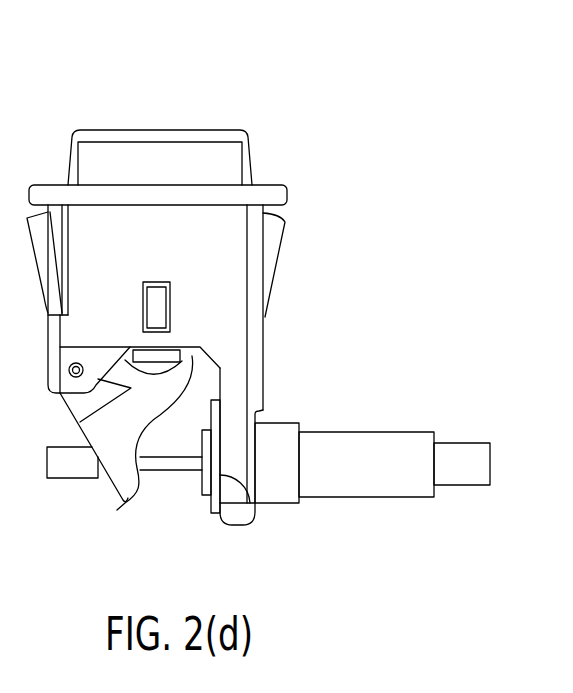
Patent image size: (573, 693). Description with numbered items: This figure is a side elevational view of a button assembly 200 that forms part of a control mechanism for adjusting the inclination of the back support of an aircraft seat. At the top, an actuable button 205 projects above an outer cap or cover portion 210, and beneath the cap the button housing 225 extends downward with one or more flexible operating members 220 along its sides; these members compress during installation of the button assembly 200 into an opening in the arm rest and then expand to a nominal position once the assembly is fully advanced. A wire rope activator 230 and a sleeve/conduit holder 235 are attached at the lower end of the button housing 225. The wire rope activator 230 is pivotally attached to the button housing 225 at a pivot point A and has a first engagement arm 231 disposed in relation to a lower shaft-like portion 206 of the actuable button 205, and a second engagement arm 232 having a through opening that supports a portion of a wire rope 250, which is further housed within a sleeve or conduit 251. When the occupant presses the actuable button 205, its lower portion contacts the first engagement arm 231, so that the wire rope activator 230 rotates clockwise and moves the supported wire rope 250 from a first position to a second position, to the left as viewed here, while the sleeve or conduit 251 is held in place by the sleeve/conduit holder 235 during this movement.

The button assembly 200 is at (306, 103).
The actuable button 205 is at (156, 162).
The outer cap or cover portion 210 is at (286, 196).
The flexible operating members 220 is at (275, 237).
The button housing 225 is at (263, 320).
The lower shaft-like portion 206 is at (220, 368).
The wire rope activator 230 is at (88, 497).
The first engagement arm 231 is at (150, 400).
The second engagement arm 232 is at (124, 503).
The sleeve/conduit holder 235 is at (230, 524).
The wire rope 250 is at (165, 462).
The sleeve or conduit 251 is at (280, 493).
The pivot point A is at (68, 368).